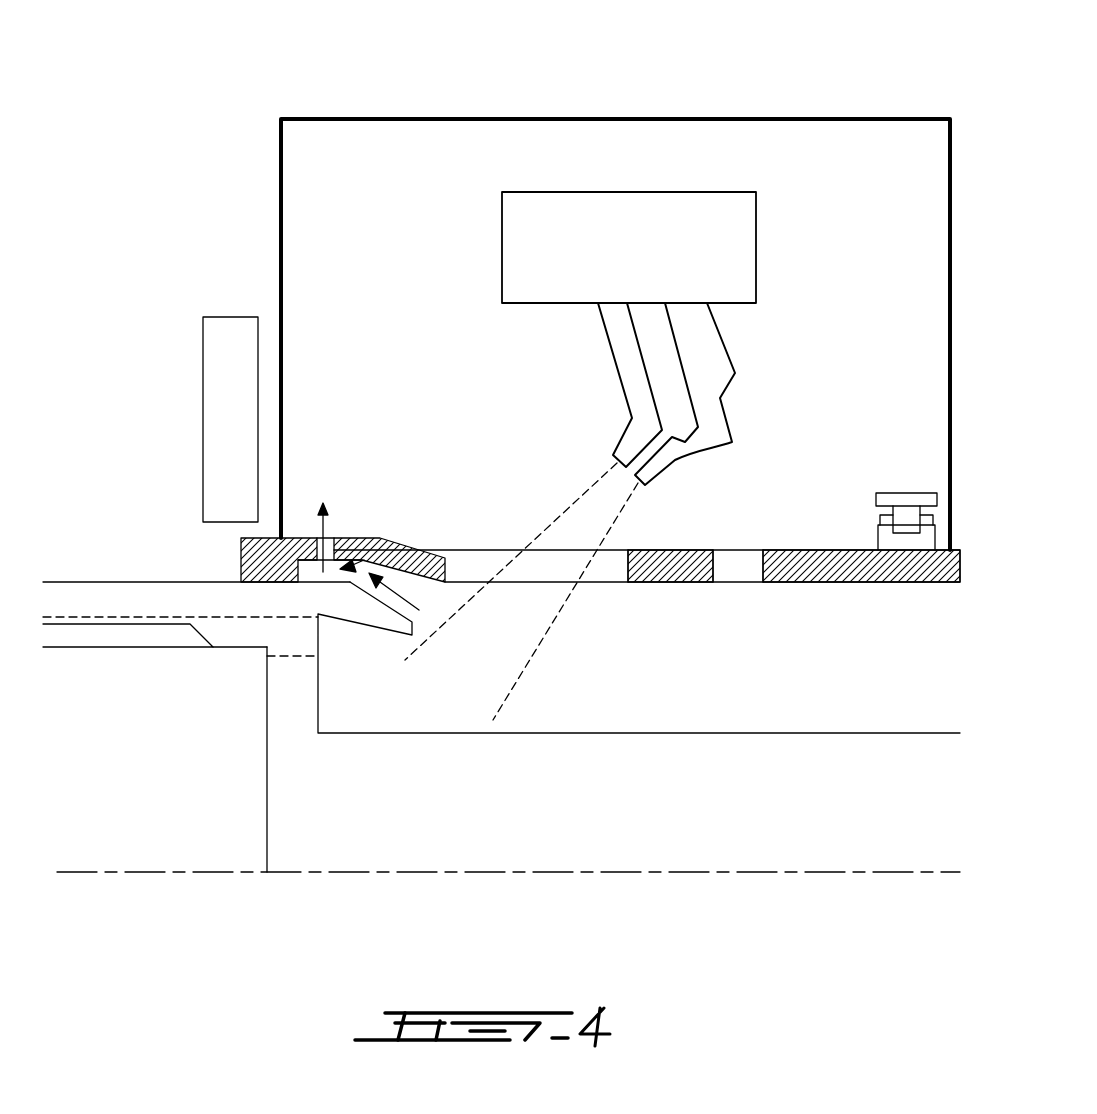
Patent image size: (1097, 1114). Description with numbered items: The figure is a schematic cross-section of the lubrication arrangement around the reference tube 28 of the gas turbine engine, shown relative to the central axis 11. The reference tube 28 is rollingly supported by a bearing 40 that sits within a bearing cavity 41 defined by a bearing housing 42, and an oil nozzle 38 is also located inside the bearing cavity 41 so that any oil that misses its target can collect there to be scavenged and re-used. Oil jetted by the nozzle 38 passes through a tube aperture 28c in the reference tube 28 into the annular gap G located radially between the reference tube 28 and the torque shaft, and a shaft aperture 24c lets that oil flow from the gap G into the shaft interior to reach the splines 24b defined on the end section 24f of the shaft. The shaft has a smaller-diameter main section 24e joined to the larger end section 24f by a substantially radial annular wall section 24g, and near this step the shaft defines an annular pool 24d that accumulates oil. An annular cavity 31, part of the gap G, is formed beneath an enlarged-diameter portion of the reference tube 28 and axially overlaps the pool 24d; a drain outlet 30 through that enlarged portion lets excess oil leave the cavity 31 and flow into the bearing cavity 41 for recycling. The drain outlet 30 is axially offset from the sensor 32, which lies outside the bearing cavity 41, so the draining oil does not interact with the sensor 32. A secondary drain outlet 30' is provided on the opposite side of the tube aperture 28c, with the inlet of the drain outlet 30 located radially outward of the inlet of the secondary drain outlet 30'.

The bearing housing 42 is at (458, 119).
The bearing cavity 41 is at (716, 156).
The sensor 32 is at (230, 350).
The nozzle 38 is at (624, 345).
The bearing 40 is at (917, 483).
The reference tube 28 is at (812, 563).
The secondary drain outlet 30' is at (717, 535).
The drain outlet 30 is at (343, 488).
The annular cavity 31 is at (414, 549).
The tube aperture 28c is at (455, 564).
The end section 24f is at (48, 602).
The pool 24d is at (342, 636).
The splines 24b is at (105, 634).
The shaft aperture 24c is at (292, 660).
The annular wall section 24g is at (296, 703).
The main section 24e is at (727, 761).
The annular gap G is at (648, 693).
The central axis 11 is at (150, 872).